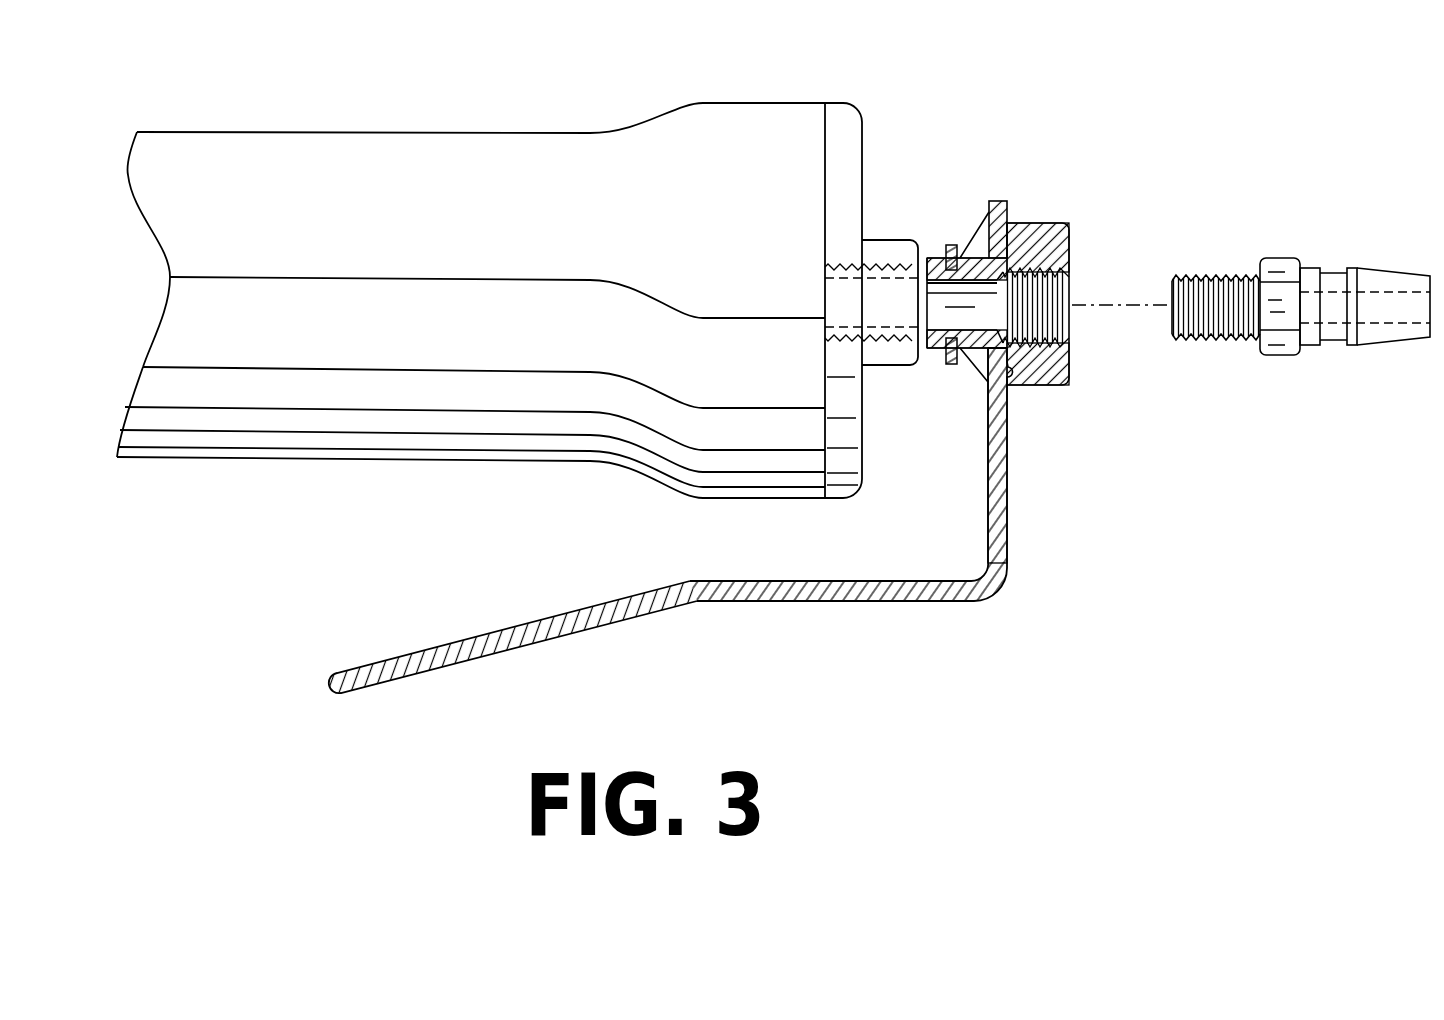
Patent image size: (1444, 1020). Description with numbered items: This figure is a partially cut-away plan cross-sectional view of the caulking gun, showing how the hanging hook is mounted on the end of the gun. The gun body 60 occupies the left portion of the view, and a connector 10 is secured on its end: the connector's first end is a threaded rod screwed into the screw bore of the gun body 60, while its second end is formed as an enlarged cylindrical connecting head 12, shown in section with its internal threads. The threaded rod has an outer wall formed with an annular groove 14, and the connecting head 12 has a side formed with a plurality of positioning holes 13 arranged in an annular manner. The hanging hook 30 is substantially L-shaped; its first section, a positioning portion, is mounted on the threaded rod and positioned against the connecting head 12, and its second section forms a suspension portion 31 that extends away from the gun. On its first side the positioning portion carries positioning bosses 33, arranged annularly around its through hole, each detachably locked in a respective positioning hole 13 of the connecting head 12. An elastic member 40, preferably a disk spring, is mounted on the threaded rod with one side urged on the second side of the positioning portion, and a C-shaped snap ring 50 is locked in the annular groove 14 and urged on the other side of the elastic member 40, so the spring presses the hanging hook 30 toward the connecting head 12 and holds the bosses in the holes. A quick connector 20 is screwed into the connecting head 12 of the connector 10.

The connector 10 is at (1052, 190).
The connecting head 12 is at (1070, 245).
The positioning holes 13 is at (1043, 372).
The annular groove 14 is at (950, 345).
The quick connector 20 is at (1278, 273).
The hanging hook 30 is at (1021, 599).
The suspension portion 31 is at (560, 623).
The positioning bosses 33 is at (1005, 388).
The elastic member 40 is at (984, 232).
The snap ring 50 is at (952, 243).
The gun body 60 is at (558, 160).